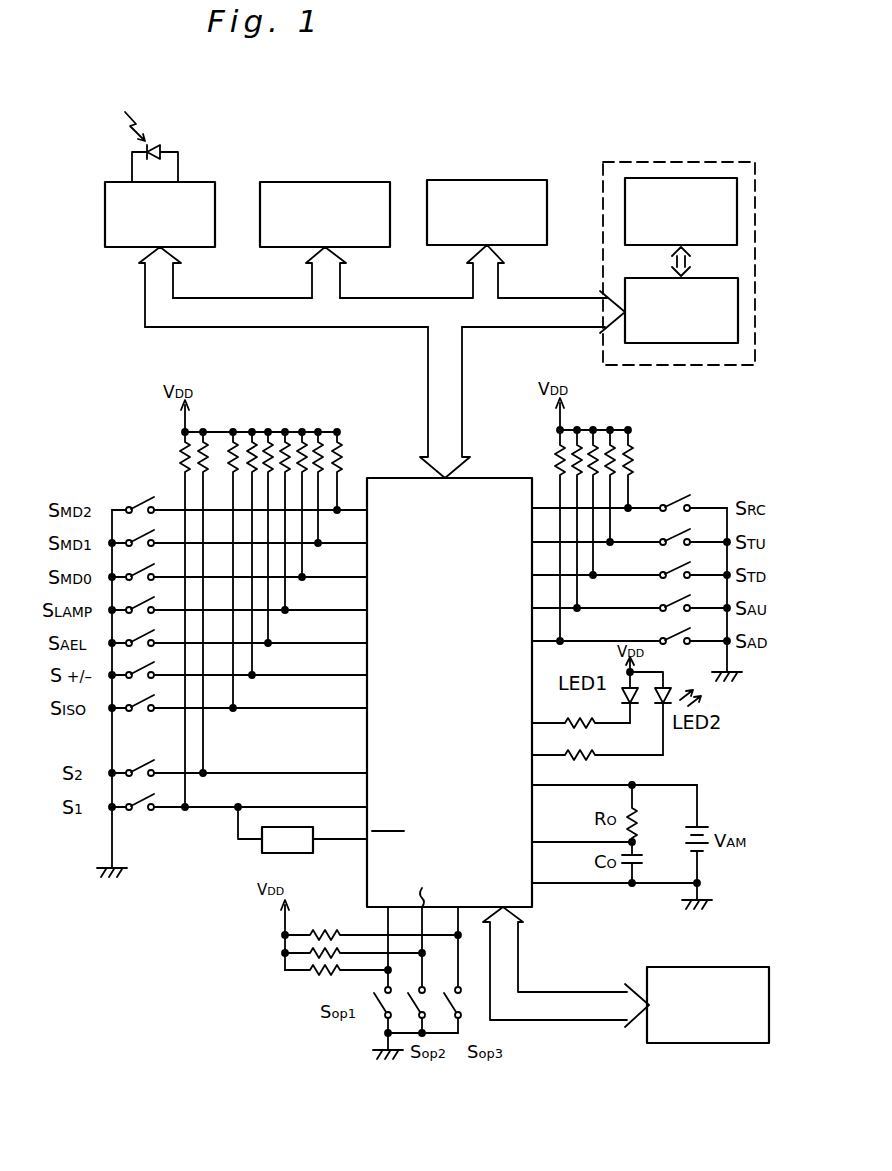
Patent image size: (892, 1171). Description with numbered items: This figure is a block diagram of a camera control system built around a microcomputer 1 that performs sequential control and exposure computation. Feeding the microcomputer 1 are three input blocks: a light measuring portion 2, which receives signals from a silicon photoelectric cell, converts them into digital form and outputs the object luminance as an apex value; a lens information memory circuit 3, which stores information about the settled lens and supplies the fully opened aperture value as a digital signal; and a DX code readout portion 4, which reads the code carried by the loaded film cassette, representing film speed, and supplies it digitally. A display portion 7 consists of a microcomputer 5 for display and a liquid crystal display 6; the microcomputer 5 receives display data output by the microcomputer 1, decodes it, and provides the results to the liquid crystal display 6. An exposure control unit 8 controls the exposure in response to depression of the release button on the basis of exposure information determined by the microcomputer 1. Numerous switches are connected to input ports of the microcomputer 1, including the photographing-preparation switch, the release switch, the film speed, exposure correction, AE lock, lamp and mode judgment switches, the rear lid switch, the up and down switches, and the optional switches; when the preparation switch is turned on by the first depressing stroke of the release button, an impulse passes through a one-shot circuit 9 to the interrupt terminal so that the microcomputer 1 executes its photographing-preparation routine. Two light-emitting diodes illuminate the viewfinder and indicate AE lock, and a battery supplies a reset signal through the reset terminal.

The microcomputer 1 is at (480, 478).
The light measuring portion 2 is at (205, 182).
The lens information memory circuit 3 is at (325, 182).
The DX code readout portion 4 is at (487, 180).
The microcomputer for display 5 is at (738, 305).
The liquid crystal display 6 is at (737, 212).
The display portion 7 is at (692, 162).
The exposure control unit 8 is at (745, 967).
The one-shot circuit 9 is at (295, 853).